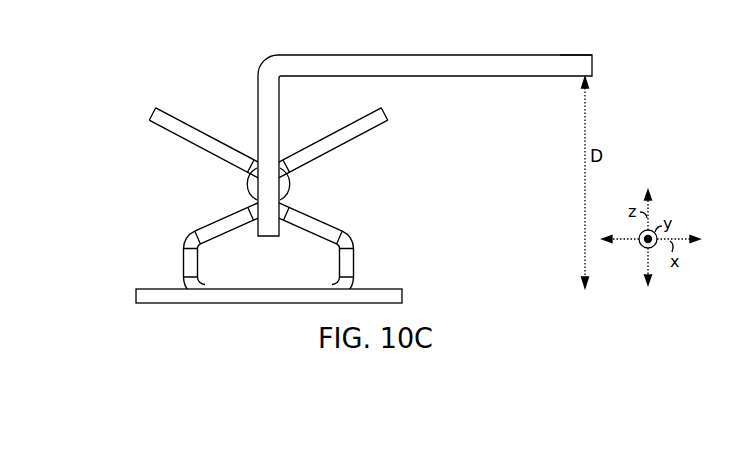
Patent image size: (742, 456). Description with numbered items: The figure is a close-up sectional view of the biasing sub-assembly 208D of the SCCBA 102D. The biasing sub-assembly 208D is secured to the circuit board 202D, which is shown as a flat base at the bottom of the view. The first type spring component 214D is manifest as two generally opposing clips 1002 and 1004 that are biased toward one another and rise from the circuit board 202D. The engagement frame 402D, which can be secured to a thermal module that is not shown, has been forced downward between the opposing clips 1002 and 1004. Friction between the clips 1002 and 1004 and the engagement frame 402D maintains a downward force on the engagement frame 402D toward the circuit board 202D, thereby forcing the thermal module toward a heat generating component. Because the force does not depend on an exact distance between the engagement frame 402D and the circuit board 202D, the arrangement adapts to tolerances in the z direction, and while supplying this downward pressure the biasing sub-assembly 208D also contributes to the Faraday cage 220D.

The SCCBA 102D is at (390, 151).
The clip 1002 is at (166, 108).
The clip 1004 is at (370, 131).
The first type spring component 214D is at (297, 187).
The biasing sub-assembly 208D is at (301, 187).
The engagement frame 402D is at (593, 63).
The Faraday cage 220D is at (605, 37).
The circuit board 202D is at (400, 289).